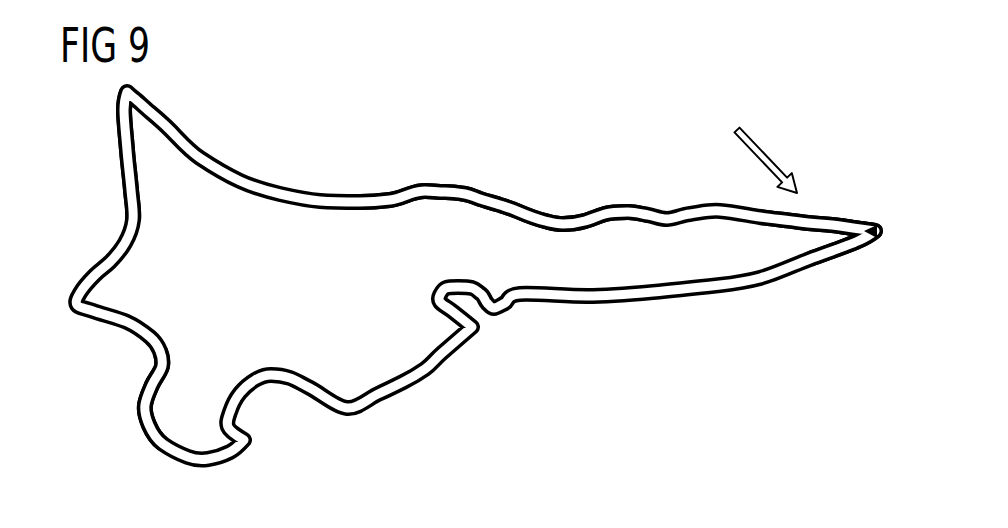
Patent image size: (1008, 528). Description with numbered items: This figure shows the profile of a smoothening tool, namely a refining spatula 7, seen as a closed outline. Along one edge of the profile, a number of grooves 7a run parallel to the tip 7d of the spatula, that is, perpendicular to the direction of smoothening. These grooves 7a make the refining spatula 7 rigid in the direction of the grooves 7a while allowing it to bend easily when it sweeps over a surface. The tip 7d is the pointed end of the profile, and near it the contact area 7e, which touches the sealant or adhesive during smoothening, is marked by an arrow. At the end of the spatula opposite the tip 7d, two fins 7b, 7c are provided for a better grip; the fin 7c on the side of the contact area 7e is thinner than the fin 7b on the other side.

The refining spatula 7 is at (684, 299).
The grooves 7a is at (371, 194).
The fin 7b is at (138, 392).
The fin 7c is at (121, 140).
The tip 7d is at (880, 240).
The contact area 7e is at (820, 217).